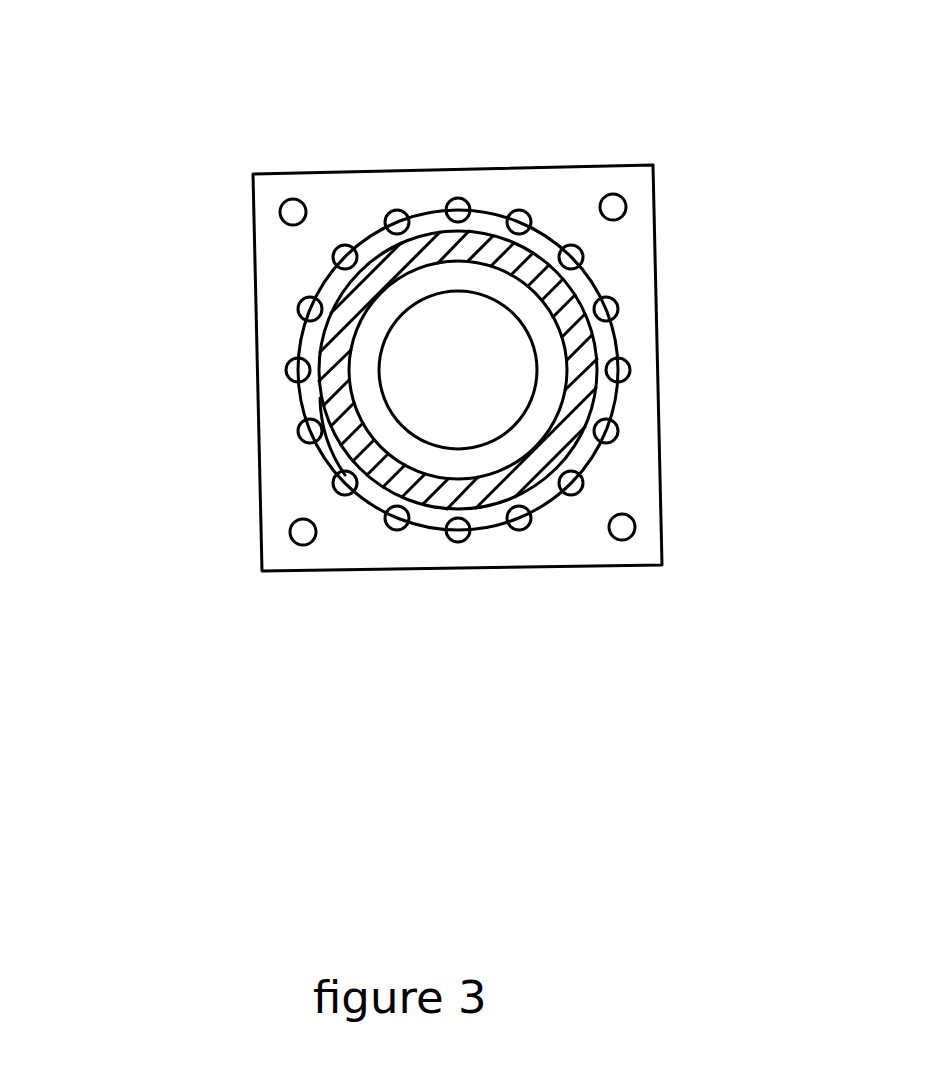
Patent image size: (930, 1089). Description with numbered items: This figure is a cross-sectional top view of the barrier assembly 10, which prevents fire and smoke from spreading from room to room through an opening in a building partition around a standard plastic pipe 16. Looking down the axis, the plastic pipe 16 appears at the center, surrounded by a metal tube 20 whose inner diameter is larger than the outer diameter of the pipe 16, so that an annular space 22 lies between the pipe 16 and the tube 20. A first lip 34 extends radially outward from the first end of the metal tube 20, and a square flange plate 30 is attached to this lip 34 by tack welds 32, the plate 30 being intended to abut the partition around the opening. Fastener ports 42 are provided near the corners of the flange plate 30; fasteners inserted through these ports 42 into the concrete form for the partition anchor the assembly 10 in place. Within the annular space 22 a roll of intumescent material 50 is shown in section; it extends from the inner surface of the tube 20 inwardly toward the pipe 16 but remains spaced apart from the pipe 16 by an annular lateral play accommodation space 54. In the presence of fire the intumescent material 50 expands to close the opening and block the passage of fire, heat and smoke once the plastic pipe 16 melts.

The barrier assembly 10 is at (150, 138).
The plastic pipe 16 is at (400, 353).
The metal tube 20 is at (487, 235).
The annular space 22 is at (578, 403).
The flange plate 30 is at (640, 462).
The tack welds 32 is at (462, 530).
The first lip 34 is at (615, 333).
The fastener ports 42 is at (293, 212).
The intumescent material 50 is at (337, 443).
The annular lateral play accommodation space 54 is at (443, 460).